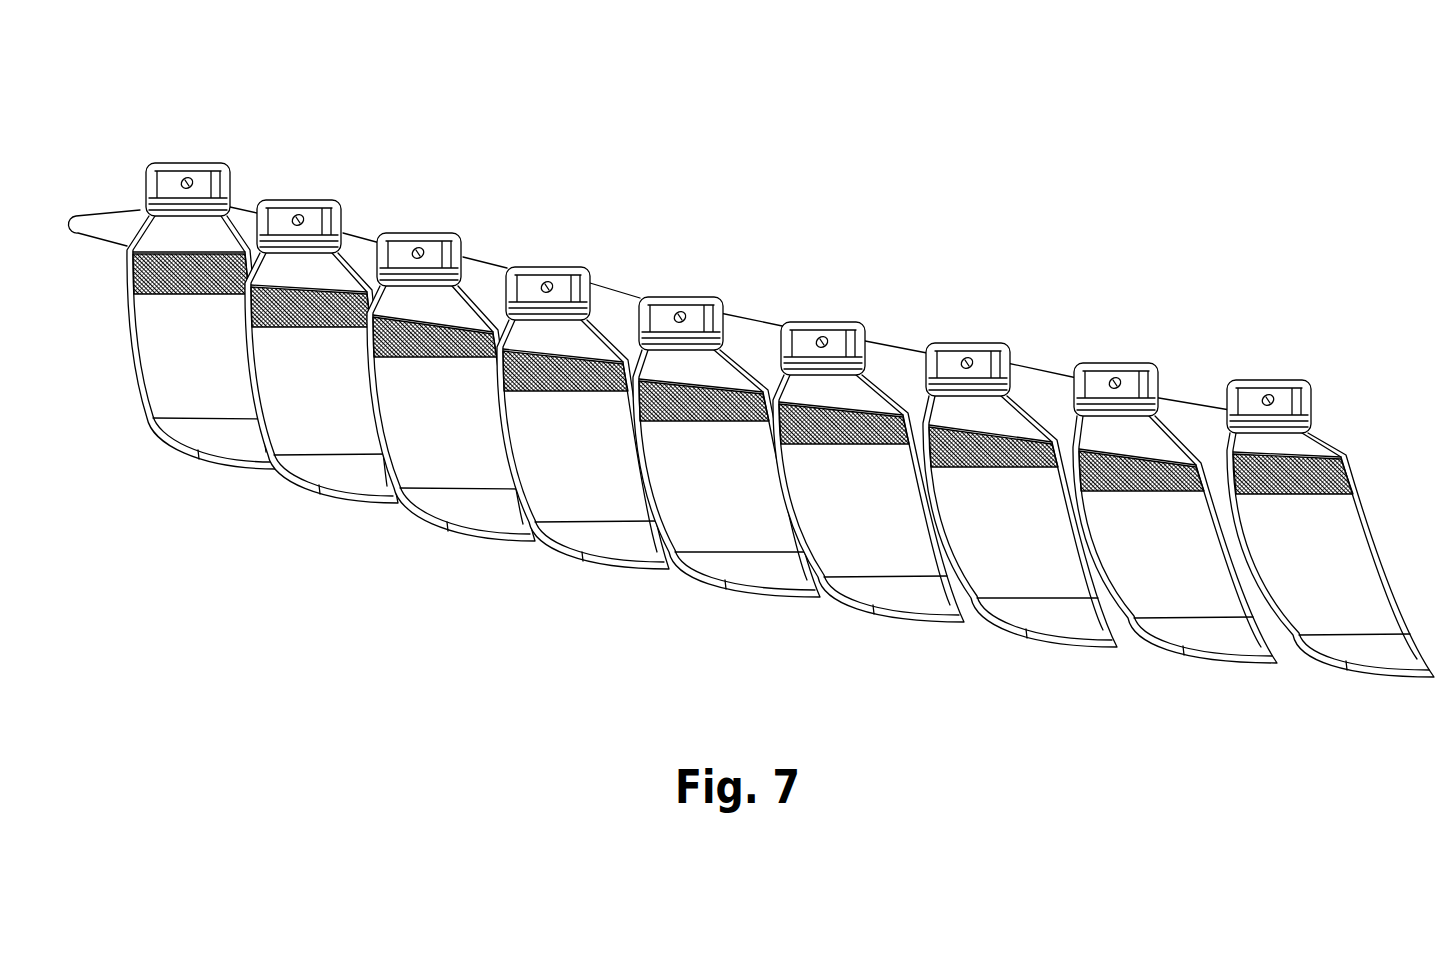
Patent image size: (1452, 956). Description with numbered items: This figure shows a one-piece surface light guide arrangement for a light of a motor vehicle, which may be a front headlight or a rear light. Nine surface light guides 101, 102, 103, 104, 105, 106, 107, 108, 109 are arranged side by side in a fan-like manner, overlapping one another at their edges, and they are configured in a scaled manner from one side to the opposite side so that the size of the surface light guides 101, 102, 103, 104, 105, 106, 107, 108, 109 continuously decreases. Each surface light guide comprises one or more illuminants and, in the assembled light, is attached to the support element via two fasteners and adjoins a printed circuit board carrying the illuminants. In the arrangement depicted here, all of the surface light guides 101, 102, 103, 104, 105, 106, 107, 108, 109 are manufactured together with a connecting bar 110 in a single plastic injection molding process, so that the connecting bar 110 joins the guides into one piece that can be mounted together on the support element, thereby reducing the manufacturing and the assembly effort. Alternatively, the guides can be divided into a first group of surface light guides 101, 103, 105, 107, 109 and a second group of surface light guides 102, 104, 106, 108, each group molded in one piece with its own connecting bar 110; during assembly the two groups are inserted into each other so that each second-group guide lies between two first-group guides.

The surface light guide 101 is at (1282, 445).
The surface light guide 102 is at (1125, 430).
The surface light guide 103 is at (977, 415).
The surface light guide 104 is at (836, 385).
The surface light guide 105 is at (692, 360).
The surface light guide 106 is at (560, 330).
The surface light guide 107 is at (432, 300).
The surface light guide 108 is at (318, 262).
The surface light guide 109 is at (200, 228).
The connecting bar 110 is at (1205, 420).